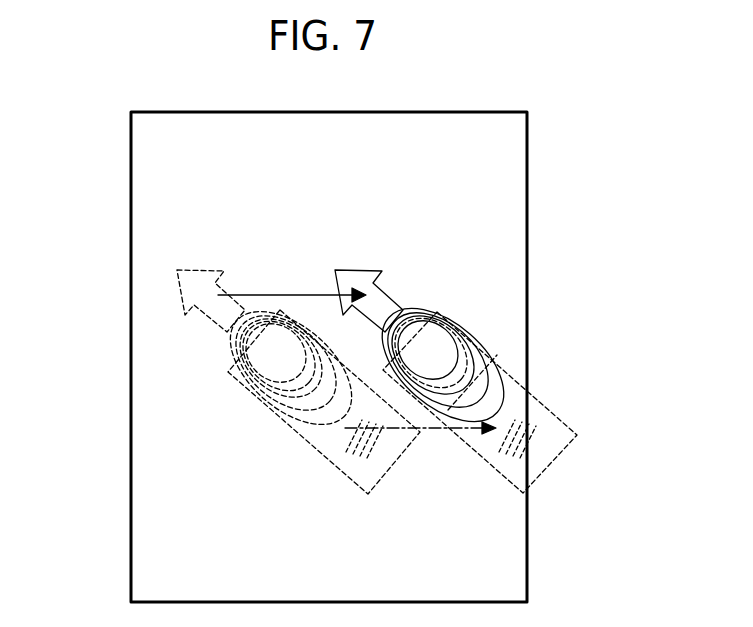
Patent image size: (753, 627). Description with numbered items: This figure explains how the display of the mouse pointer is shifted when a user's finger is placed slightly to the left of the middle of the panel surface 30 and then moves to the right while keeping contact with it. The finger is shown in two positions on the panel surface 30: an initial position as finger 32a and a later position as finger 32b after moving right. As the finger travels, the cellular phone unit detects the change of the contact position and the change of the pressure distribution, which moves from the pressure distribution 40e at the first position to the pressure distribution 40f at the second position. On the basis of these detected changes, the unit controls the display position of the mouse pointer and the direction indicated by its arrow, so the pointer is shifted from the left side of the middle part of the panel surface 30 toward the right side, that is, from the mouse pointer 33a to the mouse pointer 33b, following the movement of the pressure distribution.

The panel surface 30 is at (131, 357).
The finger 32a is at (396, 462).
The finger 32b is at (551, 463).
The mouse pointer 33a is at (178, 270).
The mouse pointer 33b is at (382, 273).
The pressure distribution 40e is at (250, 383).
The pressure distribution 40f is at (462, 332).